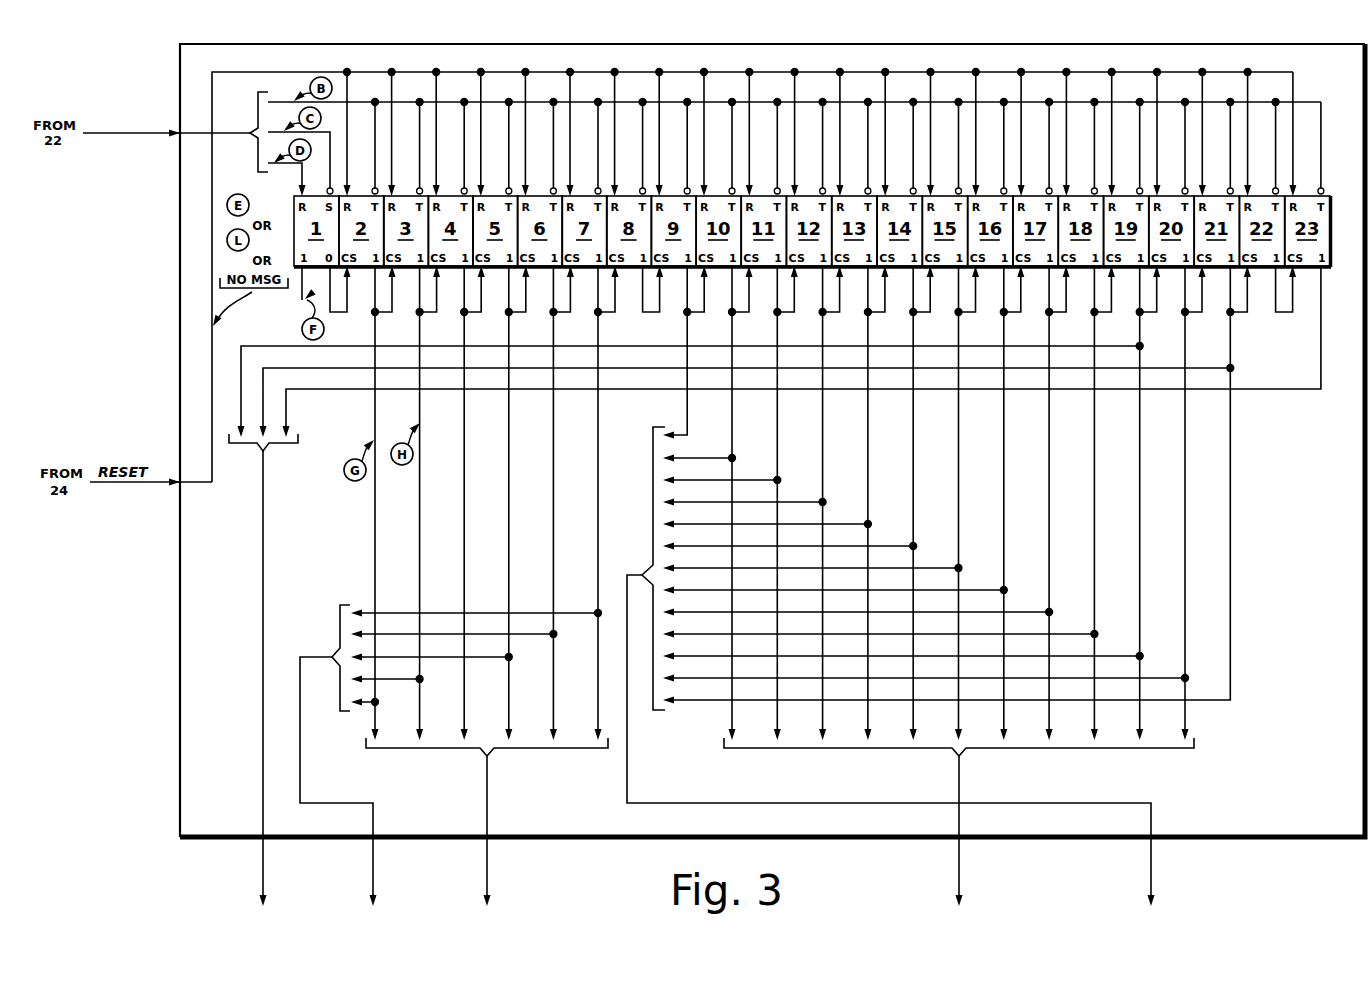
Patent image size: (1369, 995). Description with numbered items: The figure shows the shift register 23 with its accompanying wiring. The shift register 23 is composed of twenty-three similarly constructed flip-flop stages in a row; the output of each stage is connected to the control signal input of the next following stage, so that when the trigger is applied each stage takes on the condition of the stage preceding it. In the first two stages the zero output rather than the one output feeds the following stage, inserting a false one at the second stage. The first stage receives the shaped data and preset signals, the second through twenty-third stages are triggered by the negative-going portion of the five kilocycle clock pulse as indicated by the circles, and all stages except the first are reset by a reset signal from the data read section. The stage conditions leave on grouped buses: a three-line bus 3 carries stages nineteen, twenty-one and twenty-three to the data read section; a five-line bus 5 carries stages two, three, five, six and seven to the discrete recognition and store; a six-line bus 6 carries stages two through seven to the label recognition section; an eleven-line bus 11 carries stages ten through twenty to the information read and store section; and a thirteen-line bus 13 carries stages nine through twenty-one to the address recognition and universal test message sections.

The shift register 23 is at (174, 53).
The three-line output bus to 24 3 is at (254, 880).
The five-line output bus to 25 5 is at (368, 880).
The six-line output bus to 27 6 is at (481, 880).
The eleven-line output bus to 28 11 is at (951, 880).
The thirteen-line output bus to 31 and 32 13 is at (1144, 879).